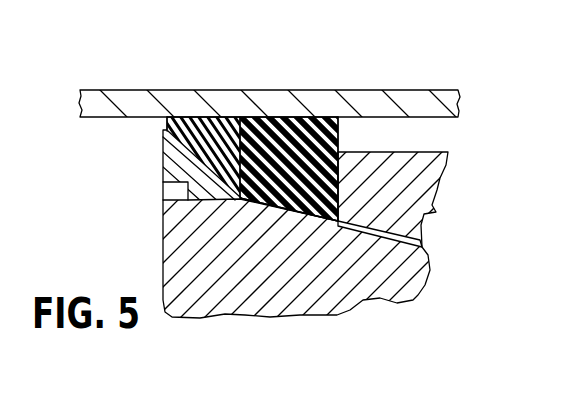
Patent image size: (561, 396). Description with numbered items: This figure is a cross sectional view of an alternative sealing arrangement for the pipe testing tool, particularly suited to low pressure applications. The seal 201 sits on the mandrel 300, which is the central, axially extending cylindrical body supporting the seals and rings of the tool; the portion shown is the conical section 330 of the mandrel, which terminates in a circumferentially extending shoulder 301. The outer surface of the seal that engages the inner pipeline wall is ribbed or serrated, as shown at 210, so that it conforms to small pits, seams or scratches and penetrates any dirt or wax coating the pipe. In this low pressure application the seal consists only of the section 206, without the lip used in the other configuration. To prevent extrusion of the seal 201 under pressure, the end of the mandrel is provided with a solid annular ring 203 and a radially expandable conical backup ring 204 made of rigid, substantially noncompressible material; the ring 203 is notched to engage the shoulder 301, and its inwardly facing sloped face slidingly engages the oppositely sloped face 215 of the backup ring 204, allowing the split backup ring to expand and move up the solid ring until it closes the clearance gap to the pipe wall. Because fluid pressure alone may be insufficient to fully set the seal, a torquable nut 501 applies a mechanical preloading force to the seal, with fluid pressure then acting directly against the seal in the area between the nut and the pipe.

The ribbed or serrated outer surface 210 is at (330, 117).
The mandrel 300 is at (407, 296).
The torquable nut 501 is at (420, 217).
The seal section 206 is at (270, 140).
The radially expandable conical backup ring 204 is at (214, 143).
The sloped face 215 is at (212, 153).
The solid annular ring 203 is at (176, 164).
The shoulder 301 is at (175, 190).
The conical section 330 is at (264, 196).
The seal 201 is at (307, 180).